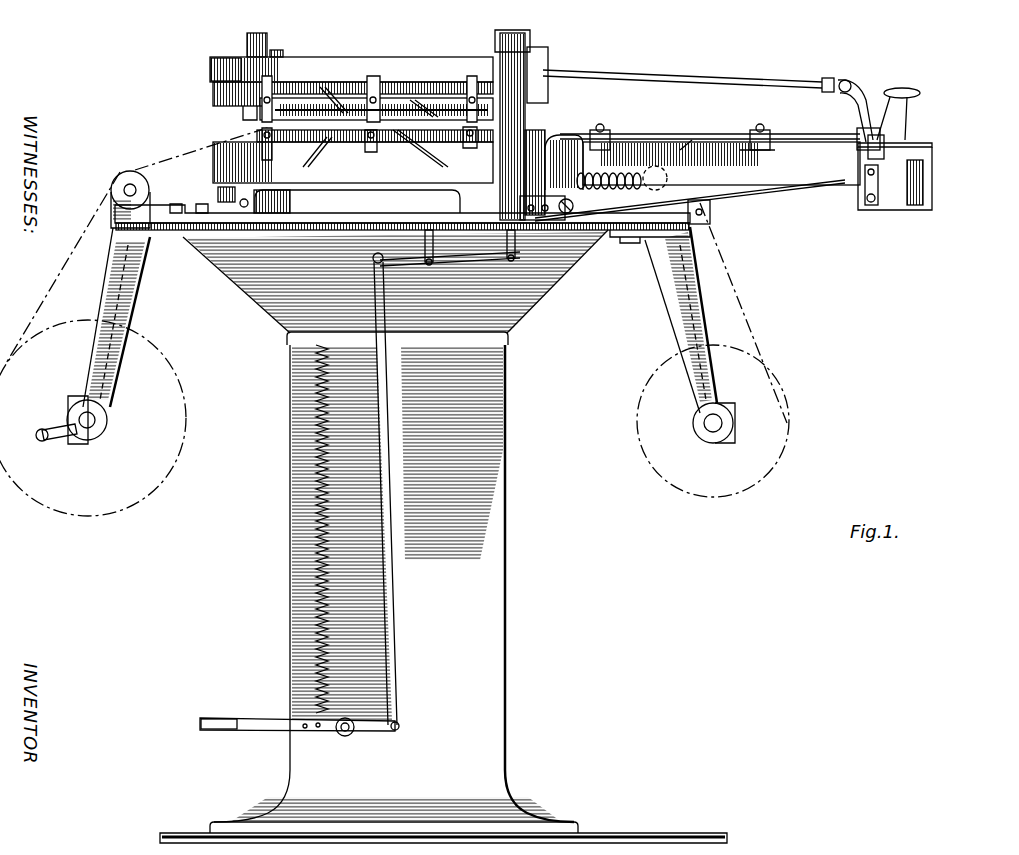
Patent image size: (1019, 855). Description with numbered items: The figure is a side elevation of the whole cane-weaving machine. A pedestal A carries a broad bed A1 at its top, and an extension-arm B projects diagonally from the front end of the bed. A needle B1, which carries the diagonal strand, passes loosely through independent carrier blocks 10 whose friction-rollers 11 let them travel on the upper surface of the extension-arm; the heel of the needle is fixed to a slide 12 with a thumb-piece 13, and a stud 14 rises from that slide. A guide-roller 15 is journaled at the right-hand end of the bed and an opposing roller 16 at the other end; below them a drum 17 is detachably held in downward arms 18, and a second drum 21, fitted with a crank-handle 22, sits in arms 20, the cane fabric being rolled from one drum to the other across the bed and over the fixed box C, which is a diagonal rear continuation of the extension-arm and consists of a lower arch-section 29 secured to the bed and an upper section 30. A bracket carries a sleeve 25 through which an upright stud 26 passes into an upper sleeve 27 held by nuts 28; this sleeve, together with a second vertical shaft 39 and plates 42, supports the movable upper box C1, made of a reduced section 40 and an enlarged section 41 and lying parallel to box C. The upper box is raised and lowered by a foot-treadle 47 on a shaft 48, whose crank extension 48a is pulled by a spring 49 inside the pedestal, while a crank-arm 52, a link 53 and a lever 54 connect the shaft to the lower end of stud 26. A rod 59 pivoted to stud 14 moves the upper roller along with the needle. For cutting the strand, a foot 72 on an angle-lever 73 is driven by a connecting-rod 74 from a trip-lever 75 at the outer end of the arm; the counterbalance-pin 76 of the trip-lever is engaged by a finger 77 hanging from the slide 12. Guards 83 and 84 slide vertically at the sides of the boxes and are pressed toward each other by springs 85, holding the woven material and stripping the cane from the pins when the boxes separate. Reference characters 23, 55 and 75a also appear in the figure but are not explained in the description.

The pedestal A is at (507, 478).
The bed A1 is at (560, 282).
The extension-arm B is at (721, 163).
The needle B1 is at (668, 133).
The fixed box C is at (339, 192).
The upper box C1 is at (351, 70).
The carrier or supporting blocks 10 is at (605, 130).
The friction-rollers 11 is at (752, 151).
The slide 12 is at (857, 150).
The thumb-piece 13 is at (908, 112).
The stud 14 is at (868, 92).
The guide-roller 15 is at (690, 150).
The opposing roller 16 is at (115, 182).
The drum 17 is at (645, 404).
The arms 18 is at (672, 327).
The arms 20 is at (135, 302).
The second drum 21 is at (184, 416).
The crank-handle 22 is at (45, 428).
The belt 23 is at (240, 132).
The sleeve 25 is at (499, 178).
The stud or upright shaft 26 is at (576, 140).
The upper sleeve 27 is at (531, 46).
The nuts 28 is at (499, 42).
The lower arch-section 29 is at (242, 207).
The upper section 30 is at (372, 158).
The vertical shaft 39 is at (268, 39).
The lower or reduced section 40 is at (335, 108).
The upper or enlarged section 41 is at (376, 91).
The plates 42 is at (228, 57).
The foot-treadle 47 is at (256, 718).
The shaft 48 is at (345, 737).
The crank extension 48a is at (303, 733).
The spring 49 is at (330, 640).
The crank-arm 52 is at (378, 735).
The link 53 is at (393, 548).
The lever 54 is at (381, 268).
The hanger 55 is at (428, 230).
The rod 59 is at (683, 72).
The foot 72 is at (565, 135).
The angle-lever or clamping-lever 73 is at (521, 205).
The connecting-rod 74 is at (787, 185).
The trip-lever 75 is at (873, 207).
The hinge bracket 75a is at (700, 226).
The counterbalance-pin 76 is at (927, 193).
The finger 77 is at (880, 141).
The guards 83 is at (398, 106).
The guards 84 is at (290, 130).
The springs 85 is at (322, 95).